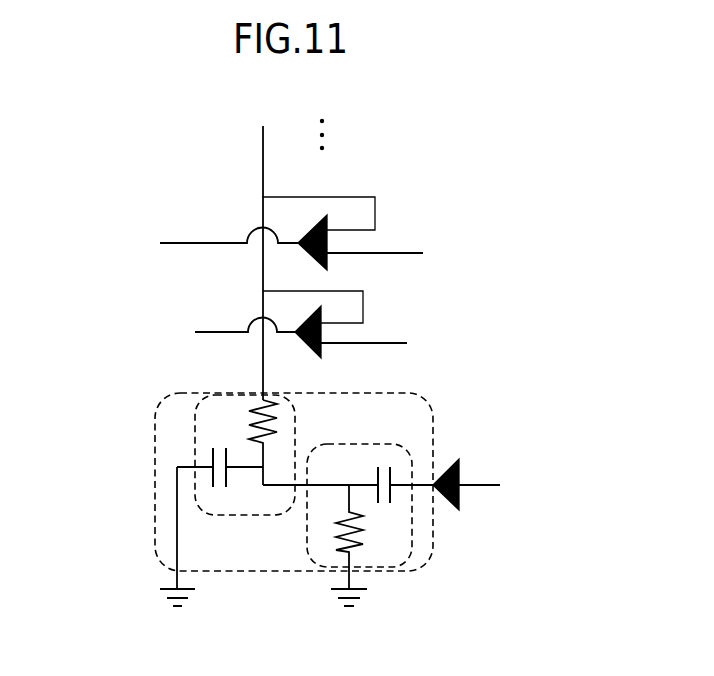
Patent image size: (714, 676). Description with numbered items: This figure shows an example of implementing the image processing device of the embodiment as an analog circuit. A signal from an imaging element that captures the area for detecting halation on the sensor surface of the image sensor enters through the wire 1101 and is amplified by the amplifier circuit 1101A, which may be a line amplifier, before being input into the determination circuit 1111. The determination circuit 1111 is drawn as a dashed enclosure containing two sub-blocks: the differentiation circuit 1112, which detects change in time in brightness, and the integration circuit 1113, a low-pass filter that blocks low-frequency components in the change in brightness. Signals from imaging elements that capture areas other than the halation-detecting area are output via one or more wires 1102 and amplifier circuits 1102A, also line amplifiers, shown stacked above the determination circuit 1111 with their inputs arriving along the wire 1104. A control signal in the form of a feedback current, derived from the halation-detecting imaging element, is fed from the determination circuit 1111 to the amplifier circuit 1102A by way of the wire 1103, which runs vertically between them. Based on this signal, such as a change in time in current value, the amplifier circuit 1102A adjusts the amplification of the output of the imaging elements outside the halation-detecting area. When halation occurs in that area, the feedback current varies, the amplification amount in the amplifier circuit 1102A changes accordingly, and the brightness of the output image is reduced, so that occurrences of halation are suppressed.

The wire 1101 is at (480, 483).
The amplifier circuit 1101A is at (459, 459).
The wire 1102 is at (390, 338).
The amplifier circuit 1102A is at (321, 358).
The wire 1103 is at (262, 368).
The wire 1104 is at (191, 332).
The determination circuit 1111 is at (433, 570).
The differentiation circuit 1112 is at (412, 530).
The integration circuit 1113 is at (193, 453).